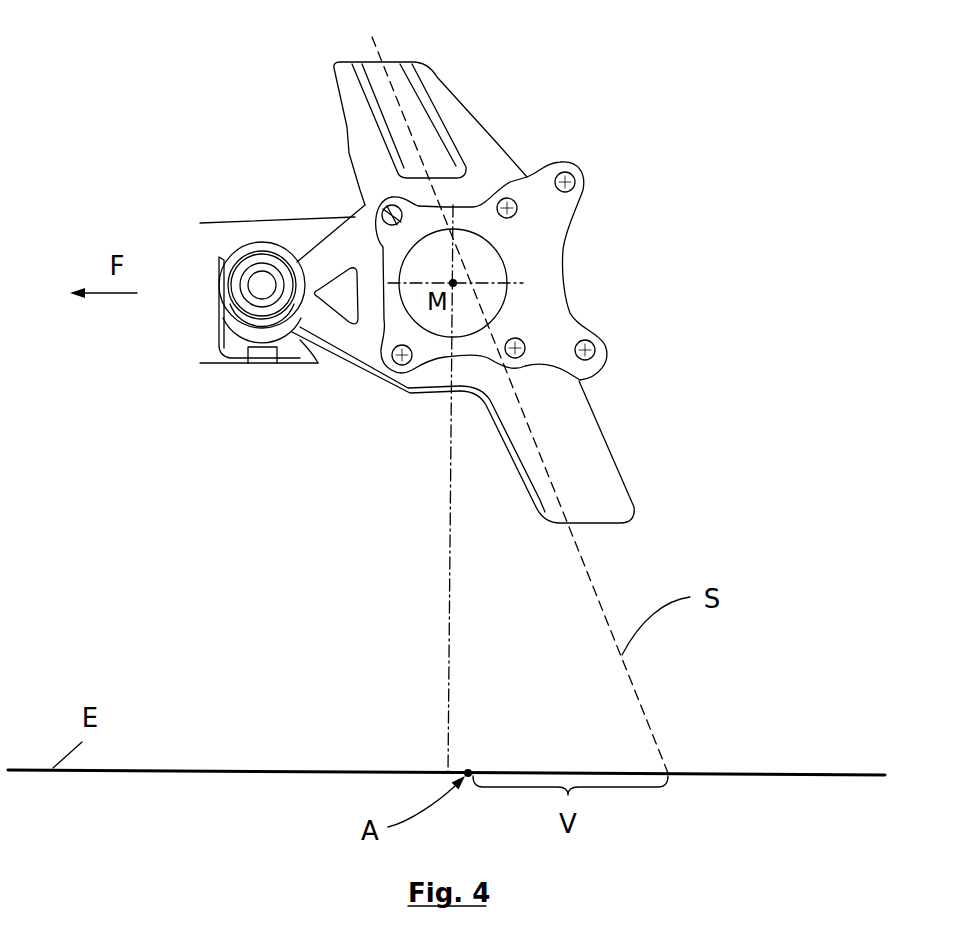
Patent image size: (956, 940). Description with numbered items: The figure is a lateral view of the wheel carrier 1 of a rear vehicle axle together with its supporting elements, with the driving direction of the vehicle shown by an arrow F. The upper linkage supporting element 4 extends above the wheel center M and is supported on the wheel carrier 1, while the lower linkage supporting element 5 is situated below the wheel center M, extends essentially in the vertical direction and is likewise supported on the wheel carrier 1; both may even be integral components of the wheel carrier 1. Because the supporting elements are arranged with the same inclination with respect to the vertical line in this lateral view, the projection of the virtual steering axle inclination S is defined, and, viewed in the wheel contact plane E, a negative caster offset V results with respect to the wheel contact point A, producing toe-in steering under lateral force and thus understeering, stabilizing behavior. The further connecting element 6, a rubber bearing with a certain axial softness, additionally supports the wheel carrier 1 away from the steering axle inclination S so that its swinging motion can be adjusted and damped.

The wheel carrier 1 is at (397, 242).
The upper linkage supporting element 4 is at (418, 120).
The lower linkage supporting element 5 is at (572, 448).
The further connecting element 6 is at (257, 307).